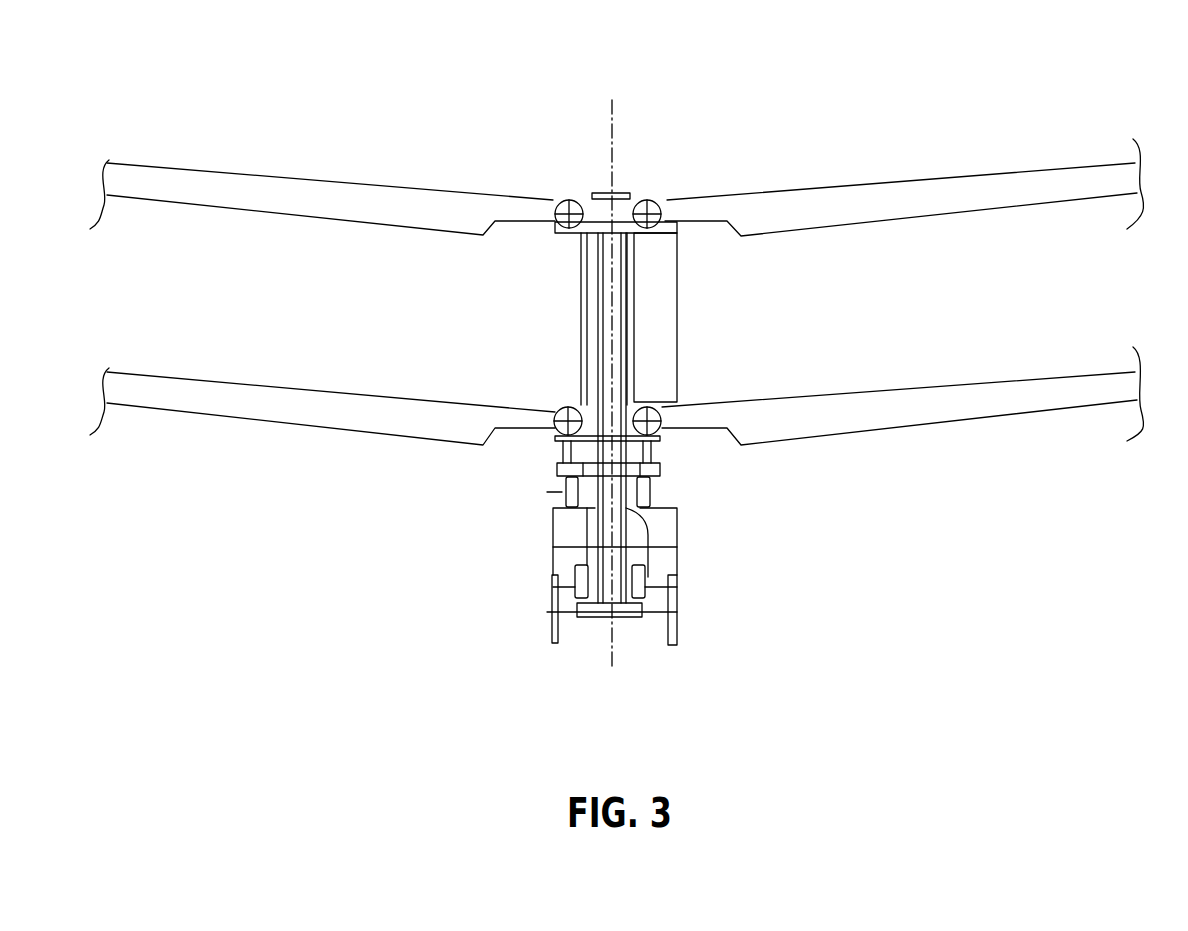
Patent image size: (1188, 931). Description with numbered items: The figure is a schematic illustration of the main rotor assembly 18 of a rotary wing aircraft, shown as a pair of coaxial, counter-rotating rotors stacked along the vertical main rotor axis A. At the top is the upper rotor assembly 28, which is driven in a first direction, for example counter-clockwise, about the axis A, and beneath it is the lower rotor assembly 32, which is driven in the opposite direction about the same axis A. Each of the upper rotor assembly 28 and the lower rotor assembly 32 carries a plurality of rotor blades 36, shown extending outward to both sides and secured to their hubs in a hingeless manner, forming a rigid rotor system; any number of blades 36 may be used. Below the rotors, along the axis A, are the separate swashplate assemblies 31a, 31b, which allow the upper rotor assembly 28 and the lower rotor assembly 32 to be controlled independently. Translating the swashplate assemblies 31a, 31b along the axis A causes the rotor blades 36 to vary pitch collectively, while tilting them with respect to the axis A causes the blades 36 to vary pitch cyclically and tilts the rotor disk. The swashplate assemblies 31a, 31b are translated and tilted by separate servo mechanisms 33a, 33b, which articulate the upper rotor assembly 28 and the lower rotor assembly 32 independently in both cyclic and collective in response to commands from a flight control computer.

The main rotor assembly 18 is at (617, 240).
The upper rotor assembly 28 is at (716, 171).
The rotor blades 36 is at (1027, 195).
The lower rotor assembly 32 is at (717, 350).
The swashplate assembly 31a is at (655, 468).
The servo mechanism 33a is at (655, 500).
The servo mechanism 33b is at (648, 580).
The swashplate assembly 31b is at (675, 614).
The main rotor axis A is at (613, 124).